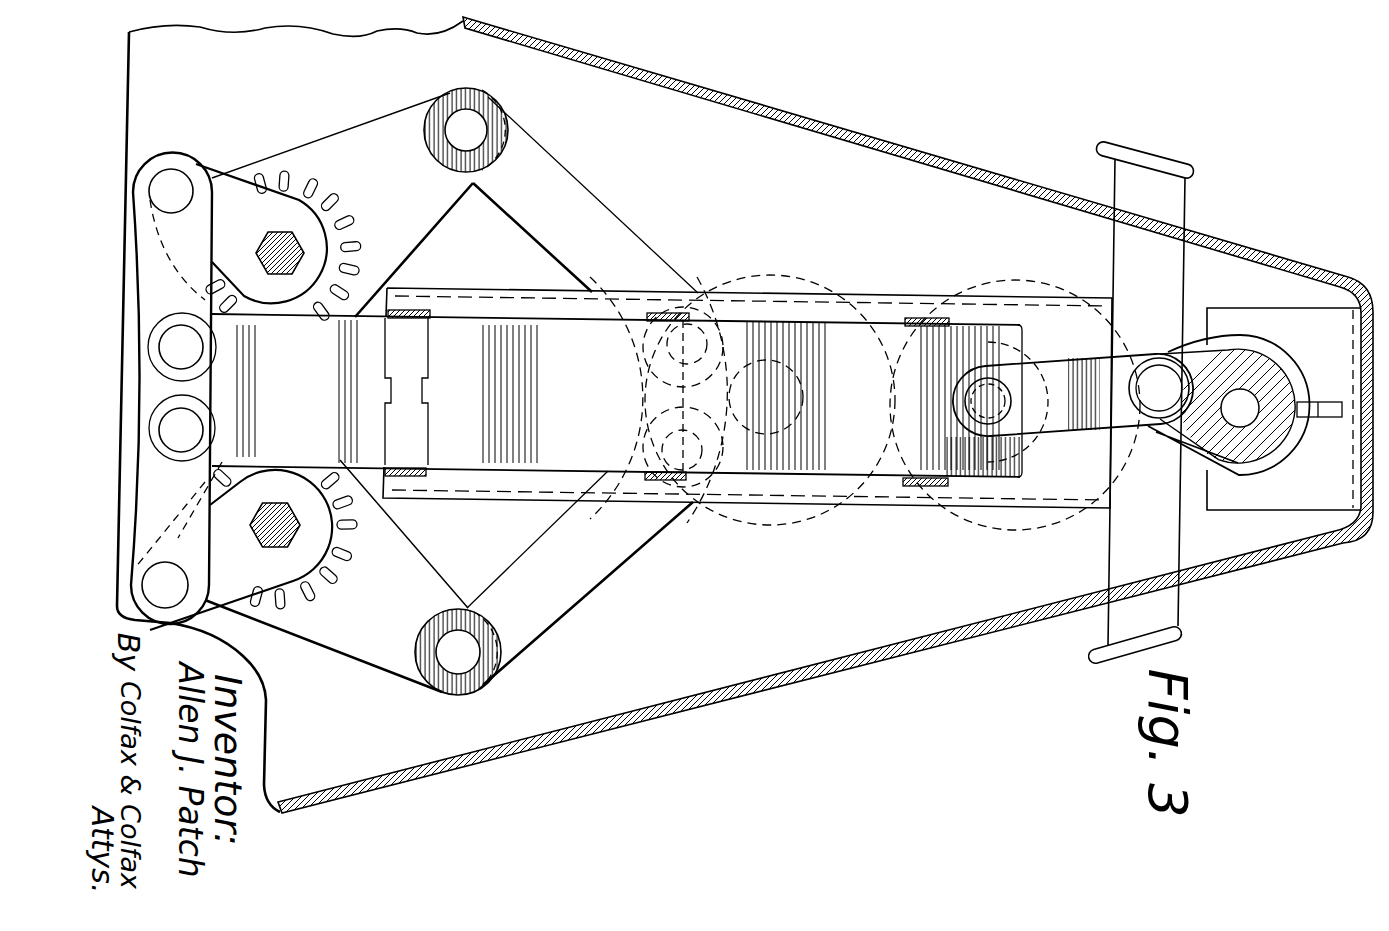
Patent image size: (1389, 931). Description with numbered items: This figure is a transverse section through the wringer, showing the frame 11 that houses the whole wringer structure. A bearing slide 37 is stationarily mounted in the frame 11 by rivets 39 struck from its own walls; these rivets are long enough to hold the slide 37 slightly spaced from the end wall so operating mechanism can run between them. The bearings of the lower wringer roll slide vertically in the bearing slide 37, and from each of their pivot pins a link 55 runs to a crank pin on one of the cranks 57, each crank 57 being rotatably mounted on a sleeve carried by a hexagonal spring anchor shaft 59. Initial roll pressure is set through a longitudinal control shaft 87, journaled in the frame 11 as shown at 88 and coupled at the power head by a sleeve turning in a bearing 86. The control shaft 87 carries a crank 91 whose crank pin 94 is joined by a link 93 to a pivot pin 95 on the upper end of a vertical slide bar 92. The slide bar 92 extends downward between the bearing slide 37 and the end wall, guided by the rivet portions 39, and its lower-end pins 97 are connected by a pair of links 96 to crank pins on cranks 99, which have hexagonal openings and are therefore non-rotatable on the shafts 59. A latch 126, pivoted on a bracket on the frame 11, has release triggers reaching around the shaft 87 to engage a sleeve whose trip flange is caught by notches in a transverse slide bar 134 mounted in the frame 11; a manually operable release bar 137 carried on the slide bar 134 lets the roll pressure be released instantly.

The wringer frame 11 is at (920, 648).
The bearing slide 37 is at (857, 505).
The rivets 39 is at (920, 487).
The link 55 is at (557, 607).
The crank 57 is at (368, 645).
The hexagonal shaft 59 is at (307, 660).
The bearing 86 is at (141, 586).
The control shaft 87 is at (1241, 411).
The journal 88 is at (1300, 497).
The crank 91 is at (1213, 362).
The vertical slide bar 92 is at (833, 345).
The link 93 is at (1063, 362).
The crank pin 94 is at (1157, 358).
The pivot pin 95 is at (982, 378).
The links 96 is at (150, 517).
The pins 97 is at (183, 417).
The cranks 99 is at (237, 580).
The latch 126 is at (1305, 400).
The transverse slide bar 134 is at (1120, 557).
The release bar 137 is at (1093, 663).